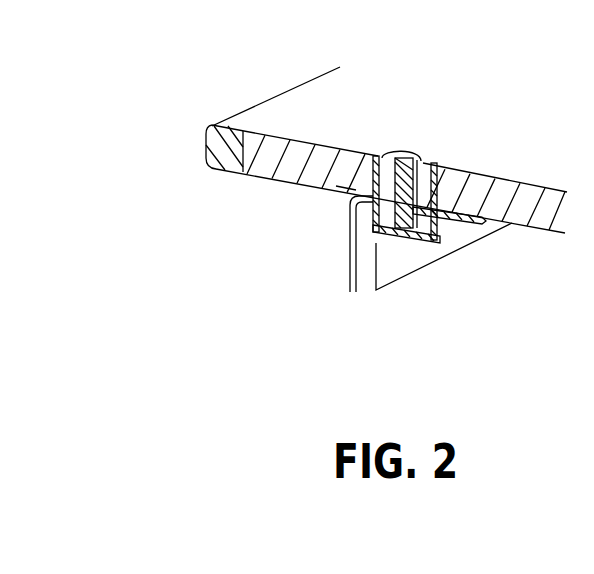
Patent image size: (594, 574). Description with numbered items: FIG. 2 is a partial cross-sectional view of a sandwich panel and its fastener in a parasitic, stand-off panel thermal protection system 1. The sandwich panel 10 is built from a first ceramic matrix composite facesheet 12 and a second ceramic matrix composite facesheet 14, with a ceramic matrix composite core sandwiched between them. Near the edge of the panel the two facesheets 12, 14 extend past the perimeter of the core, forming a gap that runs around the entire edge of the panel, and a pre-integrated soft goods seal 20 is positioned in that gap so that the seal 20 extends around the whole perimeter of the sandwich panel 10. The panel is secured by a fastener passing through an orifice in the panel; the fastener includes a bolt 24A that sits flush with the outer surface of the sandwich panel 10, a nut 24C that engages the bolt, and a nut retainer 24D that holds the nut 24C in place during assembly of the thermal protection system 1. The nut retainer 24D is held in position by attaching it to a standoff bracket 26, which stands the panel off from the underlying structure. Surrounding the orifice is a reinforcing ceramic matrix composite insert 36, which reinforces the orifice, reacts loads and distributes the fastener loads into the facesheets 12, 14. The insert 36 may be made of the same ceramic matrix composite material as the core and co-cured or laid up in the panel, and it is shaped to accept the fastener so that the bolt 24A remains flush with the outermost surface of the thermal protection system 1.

The thermal protection system 1 is at (454, 76).
The sandwich panel 10 is at (276, 68).
The first ceramic matrix composite facesheet 12 is at (263, 178).
The second ceramic matrix composite facesheet 14 is at (333, 133).
The soft goods seal 20 is at (227, 153).
The bolt 24A is at (452, 222).
The nut 24C is at (380, 236).
The nut retainer 24D is at (415, 243).
The standoff bracket 26 is at (348, 265).
The reinforcing ceramic matrix composite insert 36 is at (344, 189).